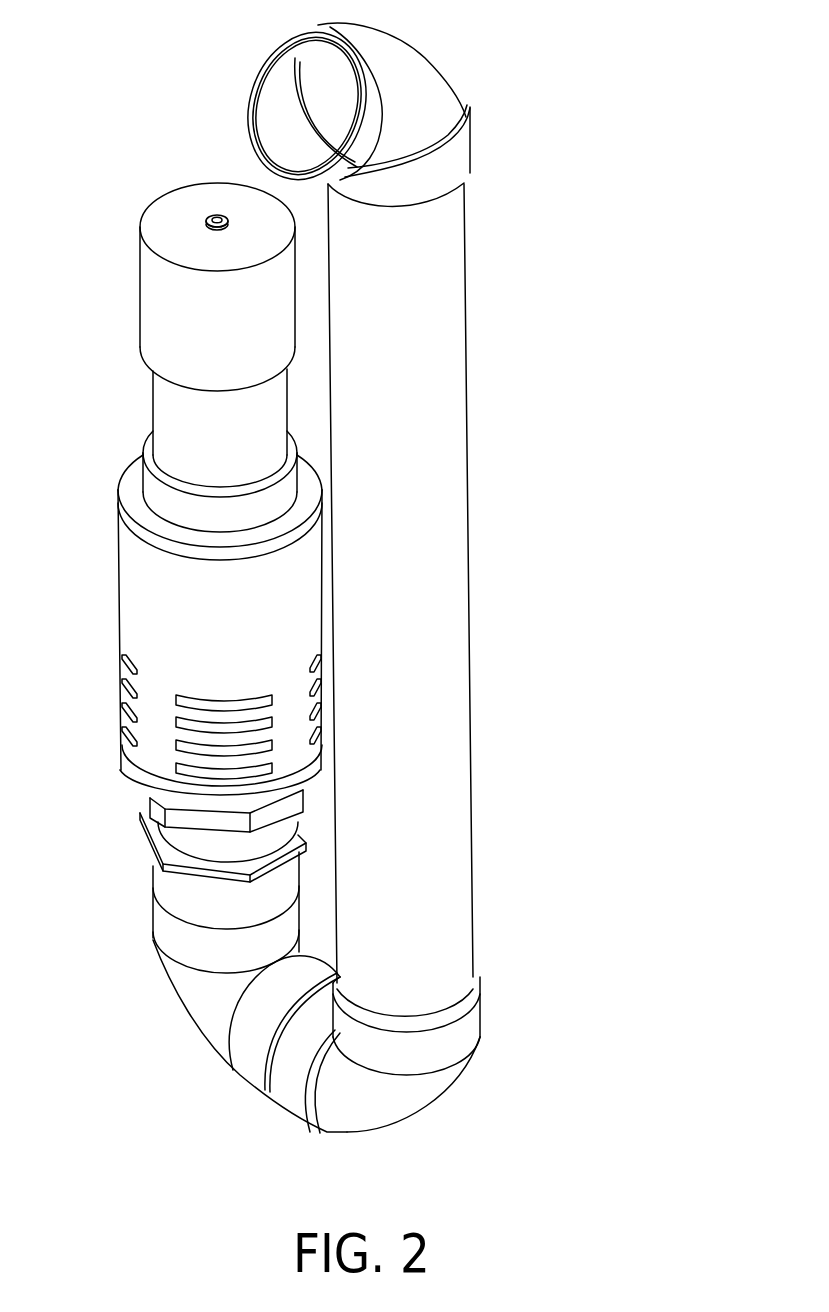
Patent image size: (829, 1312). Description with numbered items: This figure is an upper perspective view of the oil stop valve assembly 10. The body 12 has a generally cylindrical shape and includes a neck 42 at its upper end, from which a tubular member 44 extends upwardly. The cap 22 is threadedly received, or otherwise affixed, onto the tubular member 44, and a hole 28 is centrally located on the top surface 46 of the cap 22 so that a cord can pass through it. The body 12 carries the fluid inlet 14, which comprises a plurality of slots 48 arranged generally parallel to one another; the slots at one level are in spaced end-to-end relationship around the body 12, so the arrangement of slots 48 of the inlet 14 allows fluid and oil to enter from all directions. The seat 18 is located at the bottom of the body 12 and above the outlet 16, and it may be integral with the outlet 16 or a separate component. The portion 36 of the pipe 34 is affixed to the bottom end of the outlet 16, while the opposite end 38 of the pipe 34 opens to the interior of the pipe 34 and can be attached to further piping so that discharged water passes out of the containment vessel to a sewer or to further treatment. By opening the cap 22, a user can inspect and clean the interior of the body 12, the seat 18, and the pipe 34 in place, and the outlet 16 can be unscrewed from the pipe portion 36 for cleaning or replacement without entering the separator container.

The oil stop valve assembly 10 is at (178, 143).
The body 12 is at (128, 603).
The fluid inlet 14 is at (122, 717).
The outlet 16 is at (160, 878).
The seat 18 is at (143, 814).
The cap 22 is at (145, 308).
The hole 28 is at (214, 215).
The pipe 34 is at (218, 1038).
The portion of pipe 36 is at (165, 928).
The opposite end of pipe 38 is at (257, 69).
The neck 42 is at (143, 452).
The tubular member 44 is at (153, 404).
The top surface 46 is at (158, 212).
The slots 48 is at (125, 668).